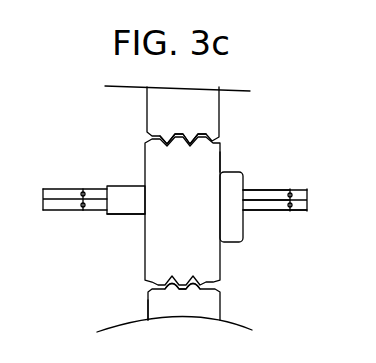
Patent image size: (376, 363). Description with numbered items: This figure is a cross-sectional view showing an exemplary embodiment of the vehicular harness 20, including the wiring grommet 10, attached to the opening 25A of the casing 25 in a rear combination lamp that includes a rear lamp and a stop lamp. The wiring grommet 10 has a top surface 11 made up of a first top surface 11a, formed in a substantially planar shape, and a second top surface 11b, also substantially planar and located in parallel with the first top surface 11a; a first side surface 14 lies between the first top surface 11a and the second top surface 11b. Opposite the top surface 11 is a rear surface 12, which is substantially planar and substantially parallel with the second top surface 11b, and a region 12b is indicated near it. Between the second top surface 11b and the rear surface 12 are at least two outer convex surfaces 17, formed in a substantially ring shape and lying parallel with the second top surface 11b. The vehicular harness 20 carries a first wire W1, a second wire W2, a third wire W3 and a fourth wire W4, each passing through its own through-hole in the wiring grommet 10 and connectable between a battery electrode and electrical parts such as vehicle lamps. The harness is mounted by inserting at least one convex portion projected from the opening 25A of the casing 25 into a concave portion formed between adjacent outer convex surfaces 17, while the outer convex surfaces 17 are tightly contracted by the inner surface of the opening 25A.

The vehicular harness 20 is at (90, 136).
The wiring grommet 10 is at (212, 205).
The casing 25 is at (204, 113).
The opening 25A is at (147, 284).
The outer convex surface 17 is at (145, 135).
The first side surface 14 is at (233, 245).
The top surface 11 is at (263, 154).
The first top surface 11a is at (245, 172).
The second top surface 11b is at (241, 147).
The rear surface 12 is at (140, 277).
The left cable holder portion 12b is at (128, 217).
The first wire W1 is at (56, 189).
The second wire W2 is at (88, 189).
The third wire W3 is at (43, 212).
The fourth wire W4 is at (98, 213).